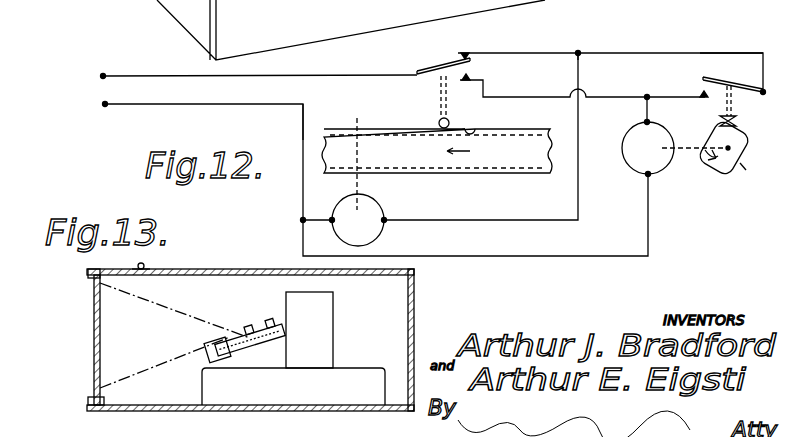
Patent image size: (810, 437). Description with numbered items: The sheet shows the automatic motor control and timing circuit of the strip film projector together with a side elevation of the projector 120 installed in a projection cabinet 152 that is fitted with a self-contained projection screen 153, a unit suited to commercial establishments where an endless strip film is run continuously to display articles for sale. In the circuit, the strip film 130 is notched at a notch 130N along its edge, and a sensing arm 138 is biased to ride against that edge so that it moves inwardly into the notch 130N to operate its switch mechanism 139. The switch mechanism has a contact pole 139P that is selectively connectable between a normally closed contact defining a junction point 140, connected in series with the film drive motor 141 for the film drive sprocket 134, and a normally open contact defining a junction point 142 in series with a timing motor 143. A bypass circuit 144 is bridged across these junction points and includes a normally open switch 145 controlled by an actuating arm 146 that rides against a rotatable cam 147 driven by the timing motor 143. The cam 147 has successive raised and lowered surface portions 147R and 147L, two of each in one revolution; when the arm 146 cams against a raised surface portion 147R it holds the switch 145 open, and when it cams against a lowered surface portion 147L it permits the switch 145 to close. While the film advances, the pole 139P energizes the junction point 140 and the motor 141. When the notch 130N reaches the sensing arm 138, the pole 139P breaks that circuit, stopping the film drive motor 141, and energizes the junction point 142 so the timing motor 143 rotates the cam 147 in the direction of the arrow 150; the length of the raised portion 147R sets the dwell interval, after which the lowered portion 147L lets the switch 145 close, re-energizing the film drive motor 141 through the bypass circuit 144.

In FIG. 13, the projector 120 is at (271, 295).
In FIG. 12, the strip film 130 is at (412, 161).
In FIG. 12, the notch 130N is at (471, 126).
In FIG. 12, the film drive sprocket 134 is at (345, 118).
In FIG. 12, the sensing arm 138 is at (440, 97).
In FIG. 12, the switch mechanism 139 is at (428, 65).
In FIG. 12, the contact pole 139P is at (457, 60).
In FIG. 12, the junction point 140 is at (578, 53).
In FIG. 12, the film drive motor 141 is at (388, 212).
In FIG. 12, the junction point 142 is at (647, 97).
In FIG. 12, the timing motor 143 is at (640, 166).
In FIG. 12, the bypass circuit 144 is at (704, 53).
In FIG. 12, the normally open switch 145 is at (732, 74).
In FIG. 12, the actuating arm 146 is at (735, 104).
In FIG. 12, the rotatable cam 147 is at (745, 158).
In FIG. 12, the lowered surface portion 147L is at (745, 167).
In FIG. 12, the raised surface portion 147R is at (738, 122).
In FIG. 12, the arrow 150 is at (712, 154).
In FIG. 13, the projection cabinet 152 is at (416, 307).
In FIG. 13, the projection screen 153 is at (94, 346).